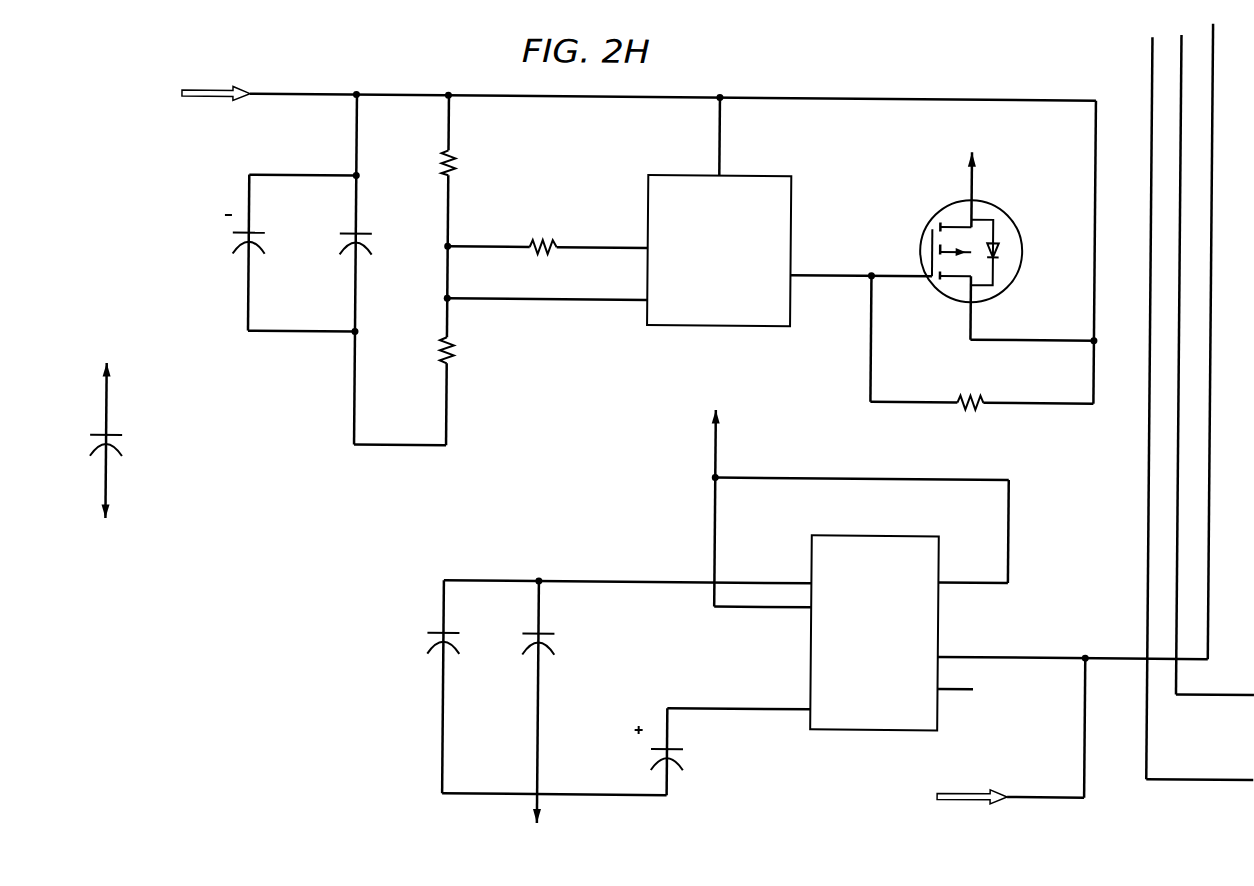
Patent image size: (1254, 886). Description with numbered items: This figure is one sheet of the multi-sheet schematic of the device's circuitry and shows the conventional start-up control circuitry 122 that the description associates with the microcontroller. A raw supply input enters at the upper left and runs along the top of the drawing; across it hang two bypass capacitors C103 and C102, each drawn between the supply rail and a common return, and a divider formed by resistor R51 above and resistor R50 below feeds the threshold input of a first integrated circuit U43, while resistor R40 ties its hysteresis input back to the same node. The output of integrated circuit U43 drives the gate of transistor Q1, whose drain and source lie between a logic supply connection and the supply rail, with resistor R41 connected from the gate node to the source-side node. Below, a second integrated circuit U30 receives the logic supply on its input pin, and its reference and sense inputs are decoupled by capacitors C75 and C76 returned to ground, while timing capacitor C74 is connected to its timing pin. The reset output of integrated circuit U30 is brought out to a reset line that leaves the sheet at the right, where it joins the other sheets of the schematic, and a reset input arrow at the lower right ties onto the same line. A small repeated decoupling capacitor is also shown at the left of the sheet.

The start-up control circuitry 122 is at (294, 80).
The voltage detector ICL8212 U43 is at (724, 230).
The supply voltage supervisor TL770580 U30 is at (897, 614).
The transistor DRF9230 Q1 is at (994, 234).
The resistor 60.4K R51 is at (477, 162).
The resistor 20.5K R50 is at (477, 346).
The resistor 110K R40 is at (547, 250).
The resistor 1K R41 is at (970, 403).
The capacitor 0.01 C103 is at (270, 246).
The capacitor 0.01 C102 is at (381, 246).
The capacitor 200PF C75 is at (469, 644).
The capacitor 0.1 C76 is at (569, 645).
The capacitor 4.7PF C74 is at (684, 757).